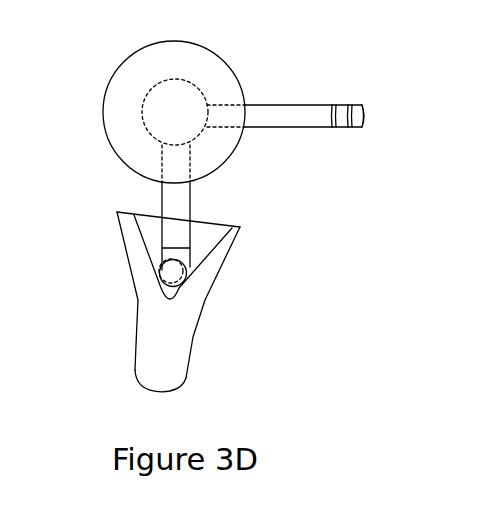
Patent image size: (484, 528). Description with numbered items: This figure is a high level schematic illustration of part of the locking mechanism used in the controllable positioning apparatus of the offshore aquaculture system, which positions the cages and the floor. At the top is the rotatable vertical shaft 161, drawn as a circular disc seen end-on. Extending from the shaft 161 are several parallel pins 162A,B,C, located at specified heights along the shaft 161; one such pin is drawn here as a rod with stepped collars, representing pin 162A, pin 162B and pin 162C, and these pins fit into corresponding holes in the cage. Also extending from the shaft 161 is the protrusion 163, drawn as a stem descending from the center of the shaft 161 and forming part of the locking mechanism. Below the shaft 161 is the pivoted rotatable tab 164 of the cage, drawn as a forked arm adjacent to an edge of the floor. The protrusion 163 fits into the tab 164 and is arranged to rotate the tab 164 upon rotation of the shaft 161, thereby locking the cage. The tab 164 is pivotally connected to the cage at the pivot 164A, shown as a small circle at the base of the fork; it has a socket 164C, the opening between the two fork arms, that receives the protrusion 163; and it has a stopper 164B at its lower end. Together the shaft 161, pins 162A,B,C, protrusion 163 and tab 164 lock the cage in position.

The rotatable vertical shaft 161 is at (153, 70).
The parallel pins 162A,B,C is at (285, 73).
The pin 162A is at (269, 116).
The pin 162B is at (340, 116).
The pin 162C is at (356, 116).
The protrusion 163 is at (182, 207).
The pivoted rotatable tab 164 is at (161, 277).
The pivot 164A is at (162, 268).
The stopper 164B is at (157, 368).
The socket 164C is at (147, 222).